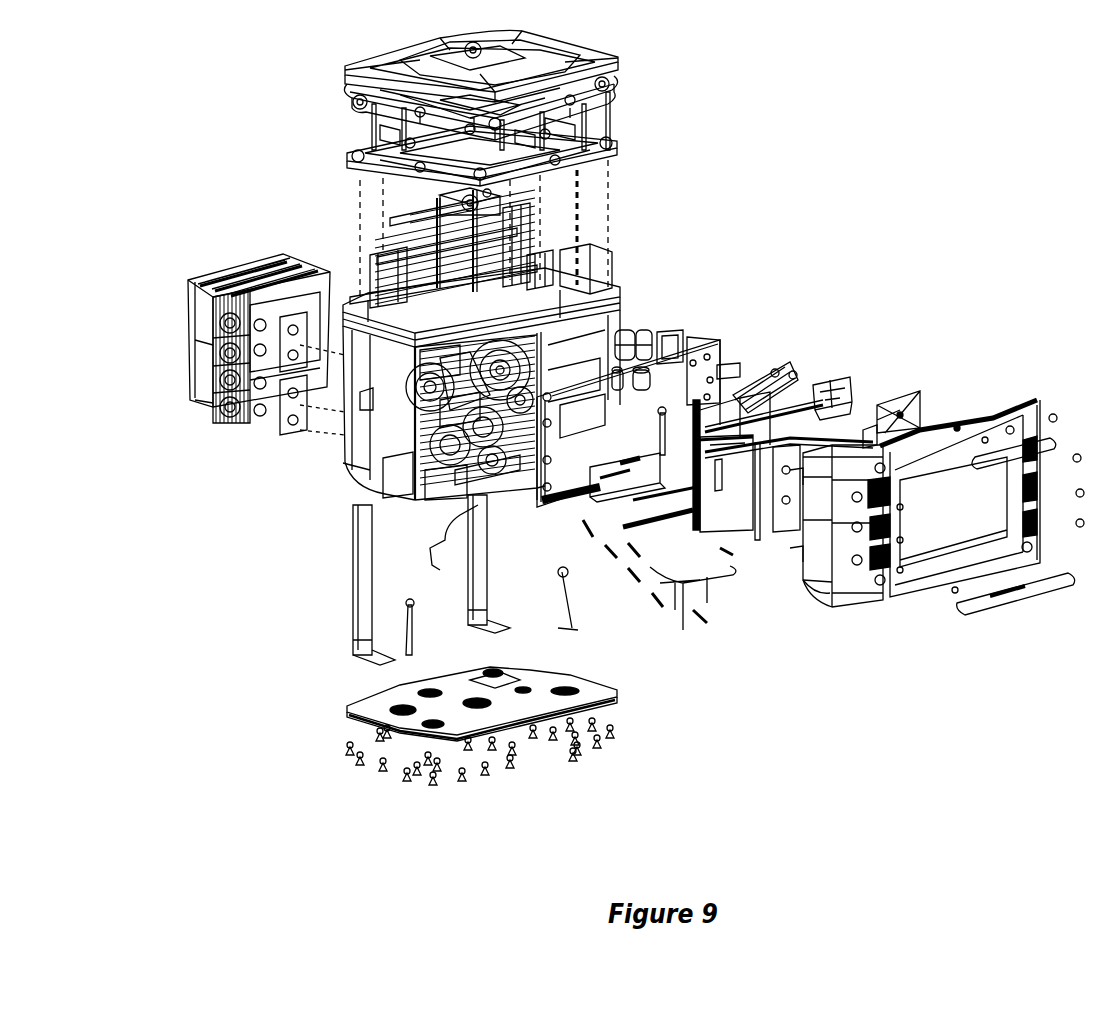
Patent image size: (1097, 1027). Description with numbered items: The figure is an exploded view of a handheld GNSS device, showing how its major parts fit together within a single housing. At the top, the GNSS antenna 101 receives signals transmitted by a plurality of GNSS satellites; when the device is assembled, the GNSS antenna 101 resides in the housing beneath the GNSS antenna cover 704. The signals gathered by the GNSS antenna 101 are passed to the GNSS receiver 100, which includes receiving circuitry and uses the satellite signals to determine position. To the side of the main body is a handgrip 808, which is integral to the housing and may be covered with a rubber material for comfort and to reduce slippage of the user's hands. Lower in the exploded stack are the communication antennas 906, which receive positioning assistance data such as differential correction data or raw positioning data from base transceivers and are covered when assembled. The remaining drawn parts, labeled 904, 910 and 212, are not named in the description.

The GNSS antenna cover 704 is at (590, 78).
The GNSS antenna 101 is at (585, 158).
The bracket 910 is at (832, 385).
The GNSS receiver 100 is at (878, 418).
The handgrip 808 is at (203, 403).
The housing 904 is at (415, 403).
The communication antennas 906 is at (432, 562).
The frame 212 is at (935, 512).